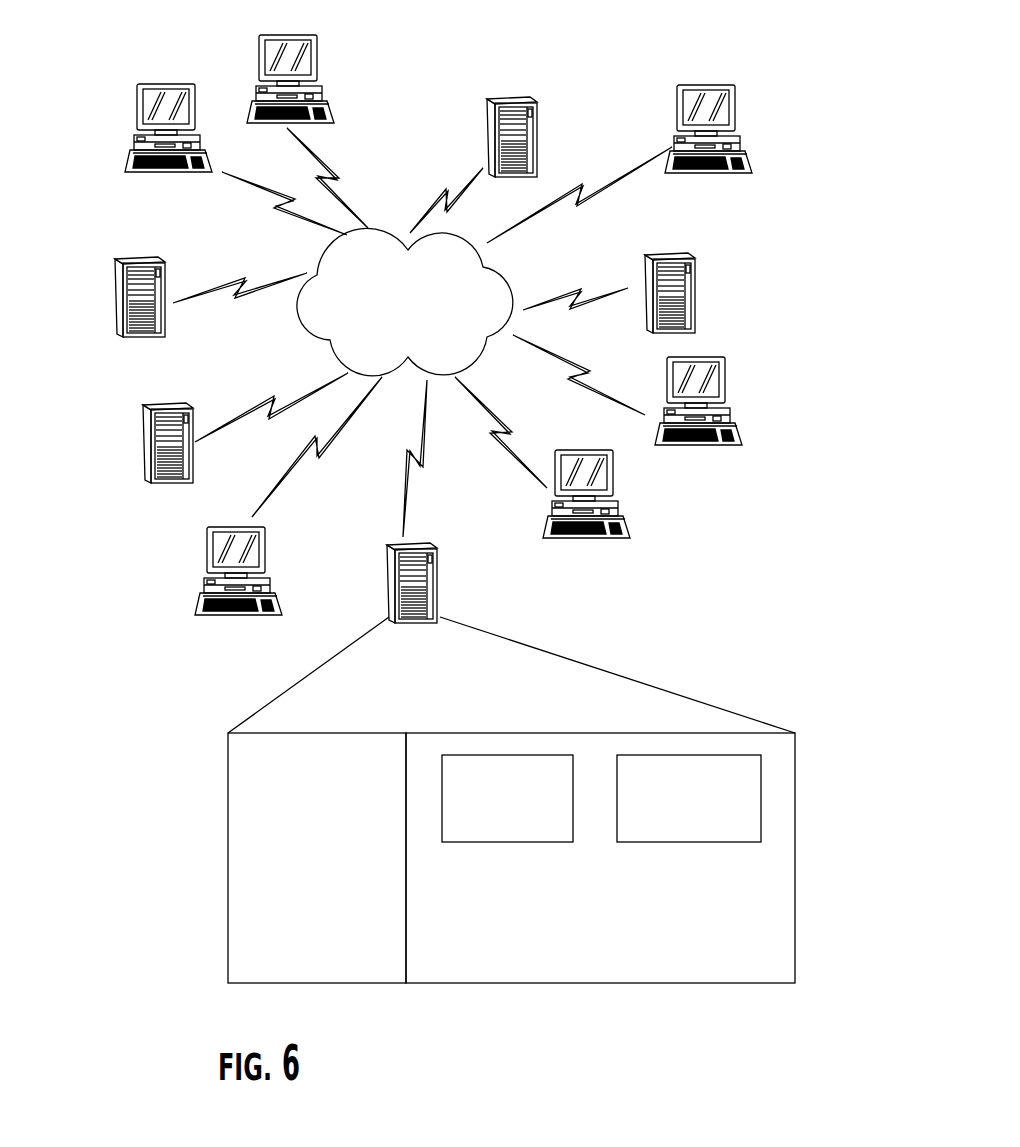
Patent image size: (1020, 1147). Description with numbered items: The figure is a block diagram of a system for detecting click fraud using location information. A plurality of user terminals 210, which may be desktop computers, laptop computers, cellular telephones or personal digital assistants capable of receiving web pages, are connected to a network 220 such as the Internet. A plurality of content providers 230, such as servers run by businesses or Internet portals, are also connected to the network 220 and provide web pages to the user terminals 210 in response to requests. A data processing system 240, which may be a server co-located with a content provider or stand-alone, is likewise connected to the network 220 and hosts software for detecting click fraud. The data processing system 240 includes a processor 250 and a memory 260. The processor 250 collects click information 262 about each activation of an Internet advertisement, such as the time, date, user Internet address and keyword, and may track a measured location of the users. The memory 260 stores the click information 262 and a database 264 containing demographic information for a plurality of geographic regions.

The user terminals 210 is at (162, 172).
The network 220 is at (480, 357).
The content providers 230 is at (487, 120).
The data processing system 240 is at (437, 580).
The processor 250 is at (228, 787).
The memory 260 is at (597, 985).
The click information 262 is at (525, 835).
The database 264 is at (707, 808).